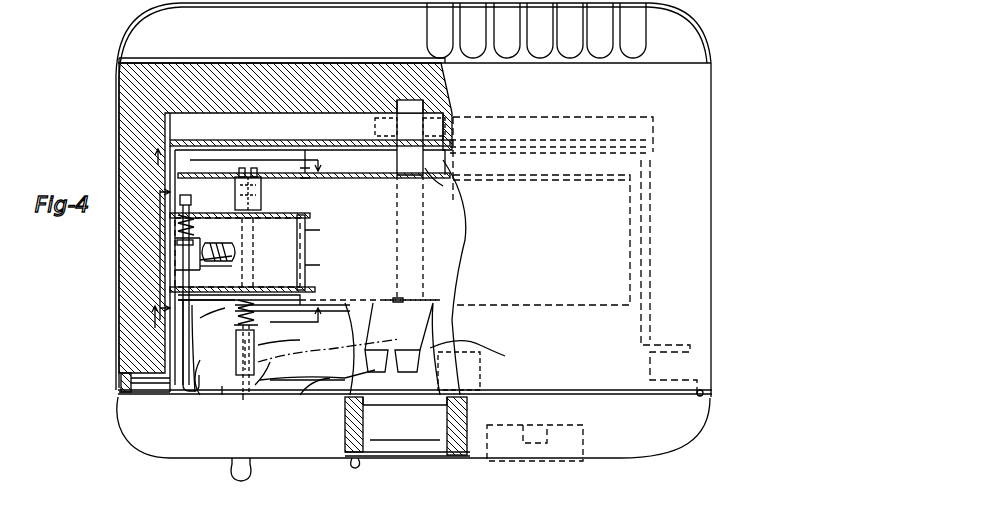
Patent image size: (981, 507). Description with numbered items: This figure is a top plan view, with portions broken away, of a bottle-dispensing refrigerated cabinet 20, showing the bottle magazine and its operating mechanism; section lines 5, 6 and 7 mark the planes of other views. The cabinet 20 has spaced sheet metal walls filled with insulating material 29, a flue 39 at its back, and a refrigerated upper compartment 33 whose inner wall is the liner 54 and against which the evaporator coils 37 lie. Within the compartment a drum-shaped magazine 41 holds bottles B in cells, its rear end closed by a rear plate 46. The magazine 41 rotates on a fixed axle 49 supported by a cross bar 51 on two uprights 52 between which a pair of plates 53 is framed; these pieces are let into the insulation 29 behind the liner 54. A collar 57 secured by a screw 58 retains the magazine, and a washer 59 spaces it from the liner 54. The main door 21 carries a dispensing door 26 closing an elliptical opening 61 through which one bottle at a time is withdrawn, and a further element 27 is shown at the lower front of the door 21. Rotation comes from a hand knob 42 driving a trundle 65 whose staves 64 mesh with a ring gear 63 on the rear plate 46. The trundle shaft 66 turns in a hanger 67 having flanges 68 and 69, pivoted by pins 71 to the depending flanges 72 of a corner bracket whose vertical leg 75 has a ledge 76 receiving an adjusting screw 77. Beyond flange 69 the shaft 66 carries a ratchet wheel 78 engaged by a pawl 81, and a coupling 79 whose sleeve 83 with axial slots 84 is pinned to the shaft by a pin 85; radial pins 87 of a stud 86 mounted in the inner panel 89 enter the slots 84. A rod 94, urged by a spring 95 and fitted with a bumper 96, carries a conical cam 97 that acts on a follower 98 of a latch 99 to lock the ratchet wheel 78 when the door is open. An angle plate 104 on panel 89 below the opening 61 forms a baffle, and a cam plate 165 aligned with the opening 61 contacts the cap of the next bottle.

The cabinet 20 is at (115, 82).
The main door 21 is at (125, 428).
The dispensing door 26 is at (380, 460).
The cover plate 27 is at (505, 460).
The insulating material 29 is at (135, 104).
The upper compartment 33 is at (345, 348).
The evaporator coils 37 is at (645, 272).
The flue 39 is at (370, 34).
The magazine 41 is at (458, 277).
The hand knob 42 is at (248, 478).
The rear plate 46 is at (448, 186).
The axle 49 is at (430, 222).
The cross bar 51 is at (488, 118).
The uprights 52 is at (330, 131).
The plates 53 is at (374, 127).
The liner 54 is at (226, 141).
The collar 57 is at (385, 298).
The screw 58 is at (390, 299).
The washer 59 is at (398, 176).
The elliptical opening 61 is at (345, 409).
The ring gear 63 is at (340, 180).
The staves 64 is at (262, 182).
The trundle 65 is at (262, 196).
The trundle shaft 66 is at (262, 236).
The hanger 67 is at (306, 246).
The flange 68 is at (310, 200).
The flange 69 is at (315, 290).
The pins 71 is at (312, 240).
The depending flanges 72 is at (300, 200).
The vertical leg 75 is at (232, 268).
The ledge 76 is at (232, 258).
The screw 77 is at (232, 248).
The ratchet wheel 78 is at (256, 315).
The coupling 79 is at (290, 340).
The pawl 81 is at (335, 312).
The sleeve 83 is at (290, 358).
The axial slots 84 is at (238, 357).
The pin 85 is at (230, 322).
The stud 86 is at (258, 388).
The radial pins 87 is at (244, 397).
The inner panel 89 is at (222, 396).
The rod 94 is at (200, 396).
The spring 95 is at (218, 213).
The bumper 96 is at (183, 385).
The conical cam 97 is at (193, 348).
The follower 98 is at (208, 302).
The latch 99 is at (392, 349).
The angle plate 104 is at (480, 350).
The cam plate 165 is at (312, 398).
The bottles B is at (455, 333).
The section line 5 is at (237, 320).
The section line 6 is at (237, 160).
The section line 7 is at (151, 251).